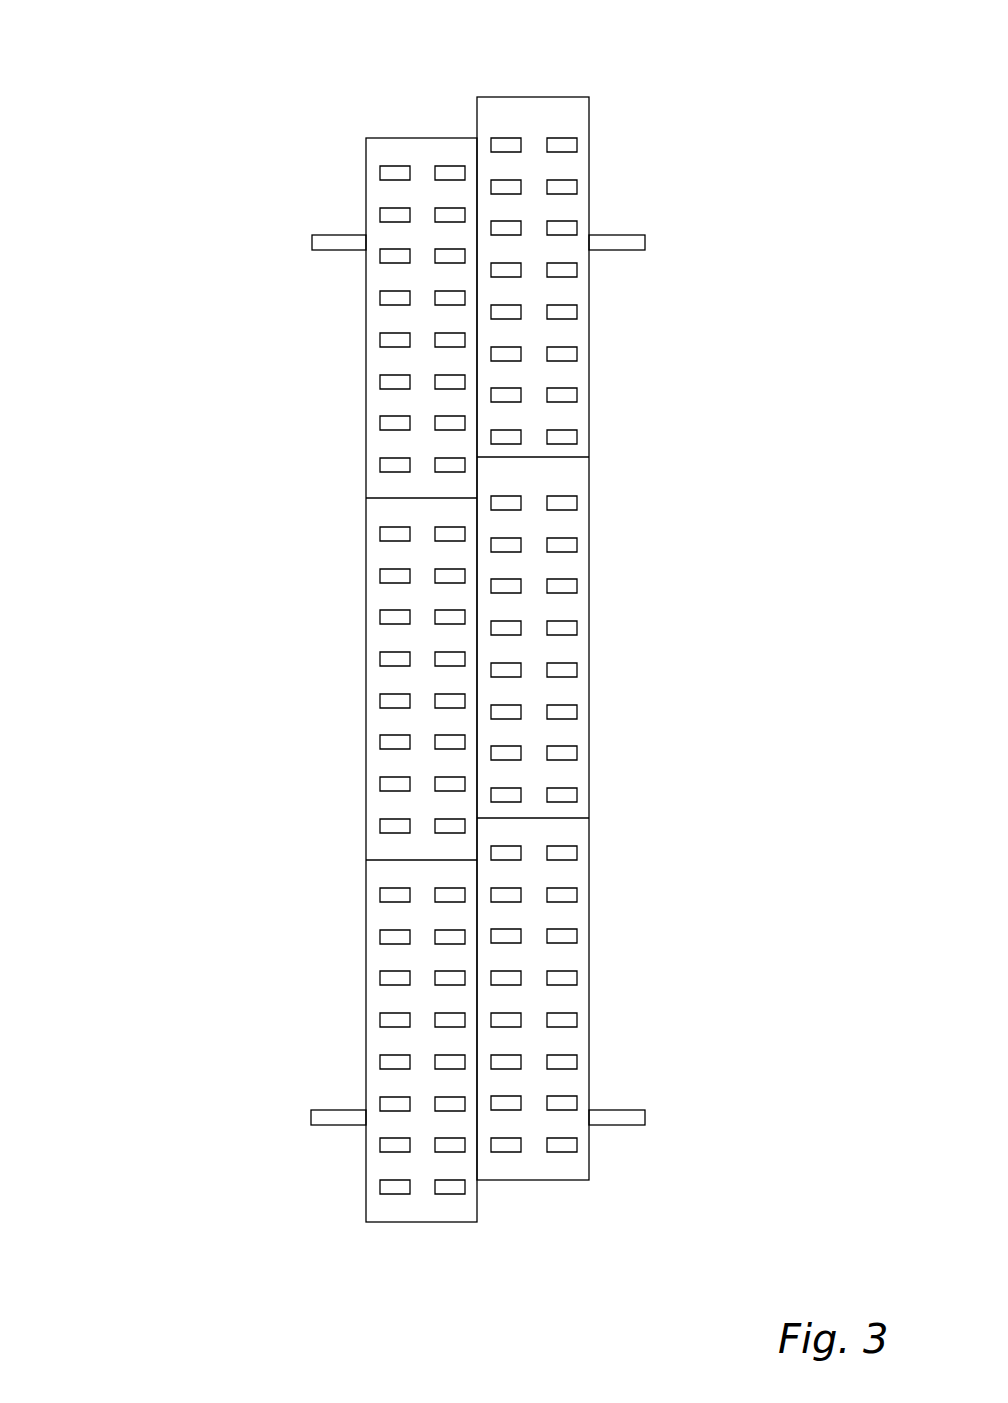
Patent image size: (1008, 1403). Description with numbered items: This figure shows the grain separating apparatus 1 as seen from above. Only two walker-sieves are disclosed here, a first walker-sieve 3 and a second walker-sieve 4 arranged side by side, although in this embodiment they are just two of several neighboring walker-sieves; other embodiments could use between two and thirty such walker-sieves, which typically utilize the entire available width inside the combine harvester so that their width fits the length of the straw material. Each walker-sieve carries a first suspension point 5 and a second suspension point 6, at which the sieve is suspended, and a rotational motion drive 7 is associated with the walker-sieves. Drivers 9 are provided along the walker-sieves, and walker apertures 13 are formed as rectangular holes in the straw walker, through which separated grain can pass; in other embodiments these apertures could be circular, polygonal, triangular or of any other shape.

The grain separating apparatus 1 is at (150, 45).
The first walker-sieve 3 is at (366, 150).
The second walker-sieve 4 is at (590, 110).
The first suspension point 5 is at (592, 242).
The second suspension point 6 is at (365, 1120).
The rotational motion drive 7 is at (323, 242).
The drivers 9 is at (397, 860).
The walker apertures 13 is at (437, 383).